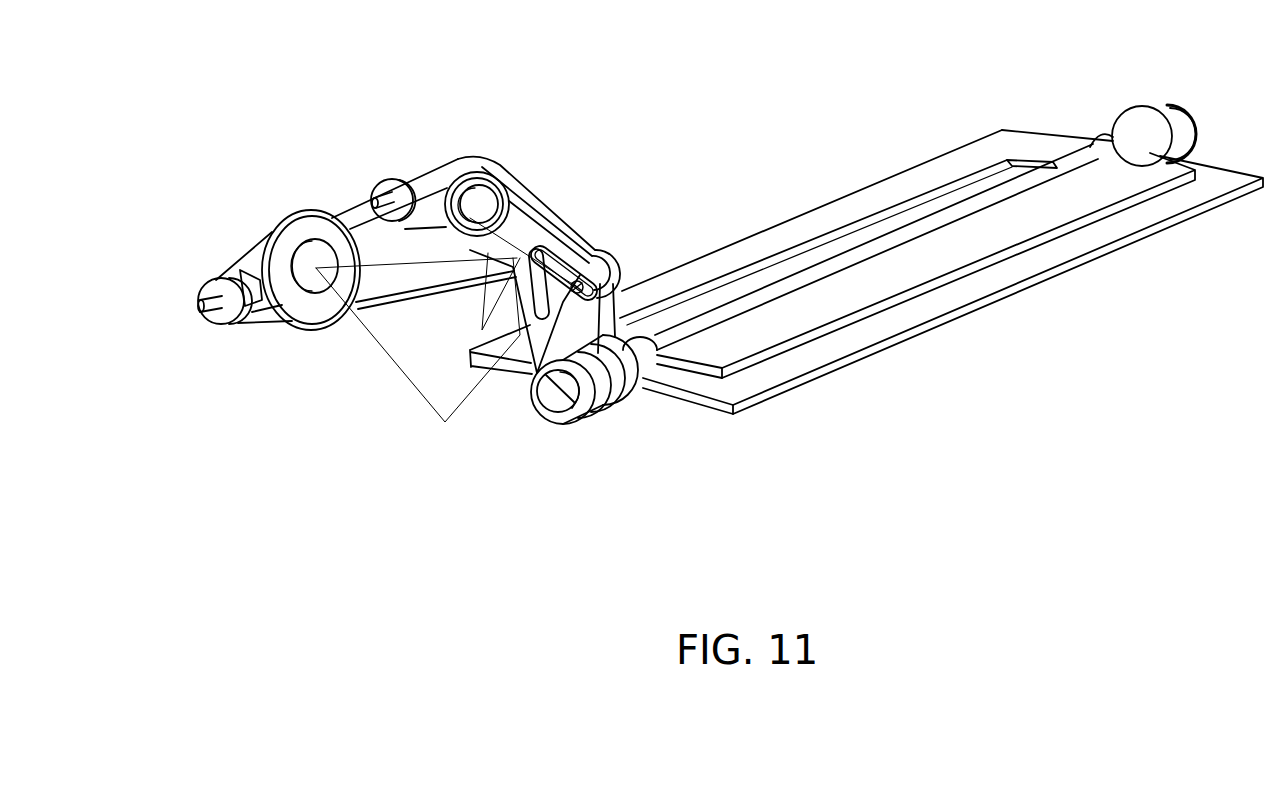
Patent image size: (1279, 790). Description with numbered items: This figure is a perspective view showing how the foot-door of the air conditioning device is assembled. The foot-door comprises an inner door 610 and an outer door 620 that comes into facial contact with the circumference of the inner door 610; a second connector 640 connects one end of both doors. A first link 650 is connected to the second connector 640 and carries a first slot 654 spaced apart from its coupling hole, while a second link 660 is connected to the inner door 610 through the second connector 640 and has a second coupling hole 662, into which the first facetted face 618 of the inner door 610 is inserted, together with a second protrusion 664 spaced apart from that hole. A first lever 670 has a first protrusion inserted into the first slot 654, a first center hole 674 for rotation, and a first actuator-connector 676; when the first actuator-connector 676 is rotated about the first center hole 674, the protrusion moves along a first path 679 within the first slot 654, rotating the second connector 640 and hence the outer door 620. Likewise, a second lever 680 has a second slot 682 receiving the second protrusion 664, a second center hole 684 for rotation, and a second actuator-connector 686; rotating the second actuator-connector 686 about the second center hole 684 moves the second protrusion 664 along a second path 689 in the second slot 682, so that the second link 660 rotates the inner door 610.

The inner door 610 is at (1067, 223).
The first facetted face 618 is at (547, 403).
The outer door 620 is at (978, 303).
The second connector 640 is at (633, 358).
The first link 650 is at (445, 414).
The first slot 654 is at (473, 320).
The second link 660 is at (600, 355).
The second coupling hole 662 is at (565, 402).
The second protrusion 664 is at (620, 293).
The first lever 670 is at (292, 333).
The first center hole 674 is at (305, 257).
The first actuator-connector 676 is at (203, 318).
The first path 679 is at (462, 405).
The second lever 680 is at (393, 167).
The second slot 682 is at (537, 250).
The second center hole 684 is at (479, 168).
The second actuator-connector 686 is at (372, 207).
The second path 689 is at (596, 240).